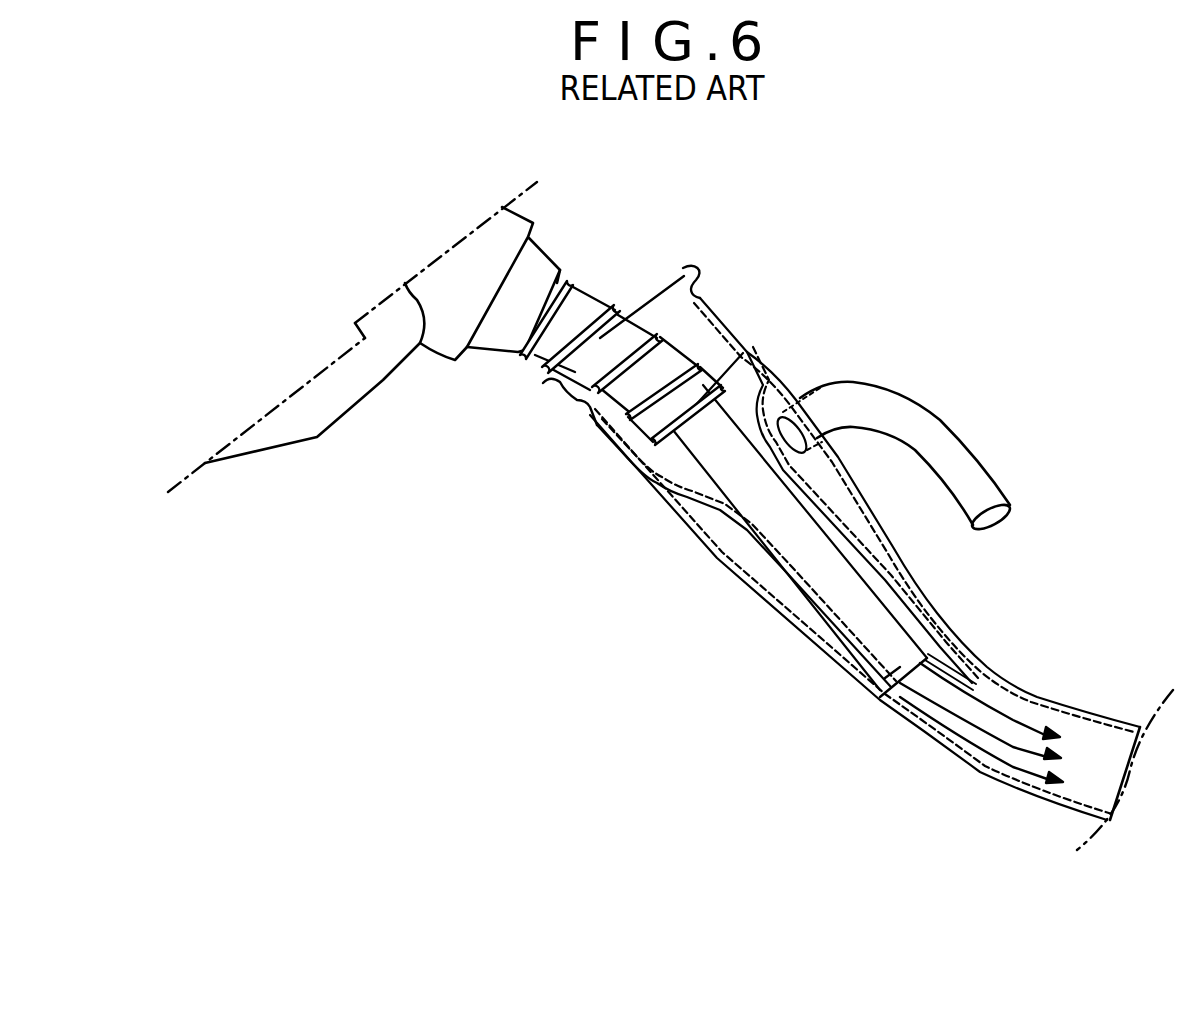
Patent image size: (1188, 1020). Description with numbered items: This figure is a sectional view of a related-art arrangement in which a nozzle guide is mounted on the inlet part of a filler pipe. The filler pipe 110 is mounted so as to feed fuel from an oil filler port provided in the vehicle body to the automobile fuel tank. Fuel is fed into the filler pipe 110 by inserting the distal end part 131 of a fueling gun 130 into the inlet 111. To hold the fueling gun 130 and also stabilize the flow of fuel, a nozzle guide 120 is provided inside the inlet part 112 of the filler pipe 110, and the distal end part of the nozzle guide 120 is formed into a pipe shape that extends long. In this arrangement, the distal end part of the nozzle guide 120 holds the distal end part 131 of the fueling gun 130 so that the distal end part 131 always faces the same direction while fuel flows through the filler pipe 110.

The filler pipe 110 is at (713, 560).
The inlet 111 is at (687, 263).
The inlet part 112 is at (627, 473).
The nozzle guide 120 is at (883, 570).
The fueling gun 130 is at (817, 583).
The distal end part 131 is at (882, 690).